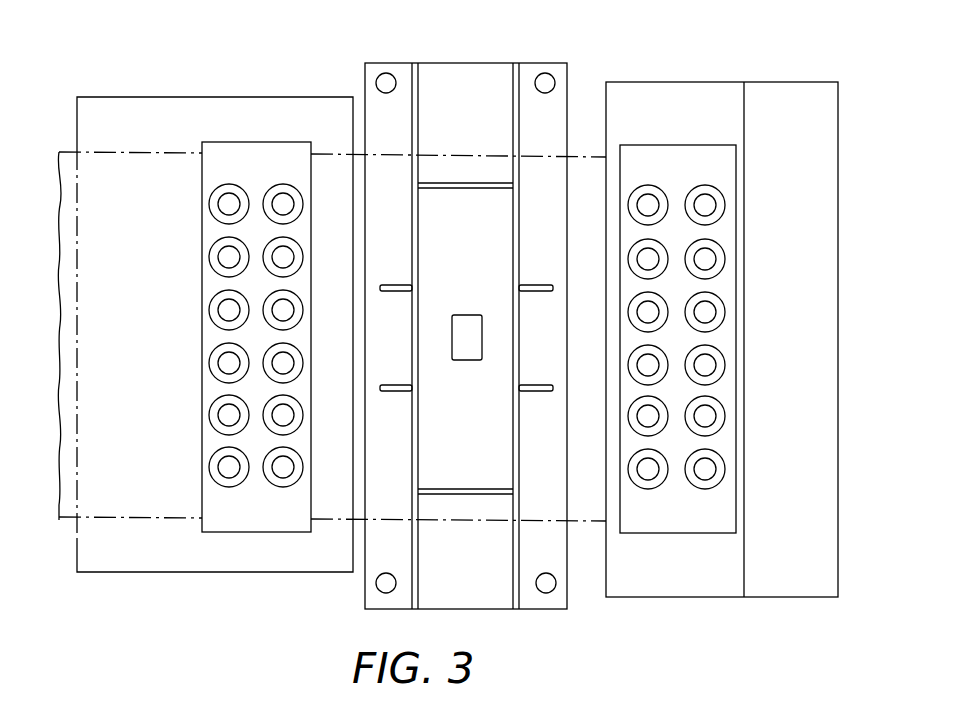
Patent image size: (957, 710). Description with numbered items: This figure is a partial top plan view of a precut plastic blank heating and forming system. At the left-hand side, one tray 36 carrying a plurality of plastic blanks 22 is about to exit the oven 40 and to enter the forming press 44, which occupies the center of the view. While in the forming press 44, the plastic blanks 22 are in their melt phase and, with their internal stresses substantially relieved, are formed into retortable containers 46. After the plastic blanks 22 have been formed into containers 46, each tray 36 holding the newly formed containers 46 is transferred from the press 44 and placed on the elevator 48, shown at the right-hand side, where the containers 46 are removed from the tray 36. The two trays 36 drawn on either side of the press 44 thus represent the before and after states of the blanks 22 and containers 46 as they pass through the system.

The plastic blanks 22 is at (221, 312).
The tray 36 is at (243, 142).
The oven 40 is at (177, 97).
The forming press 44 is at (365, 78).
The retortable containers 46 is at (705, 205).
The elevator 48 is at (668, 82).